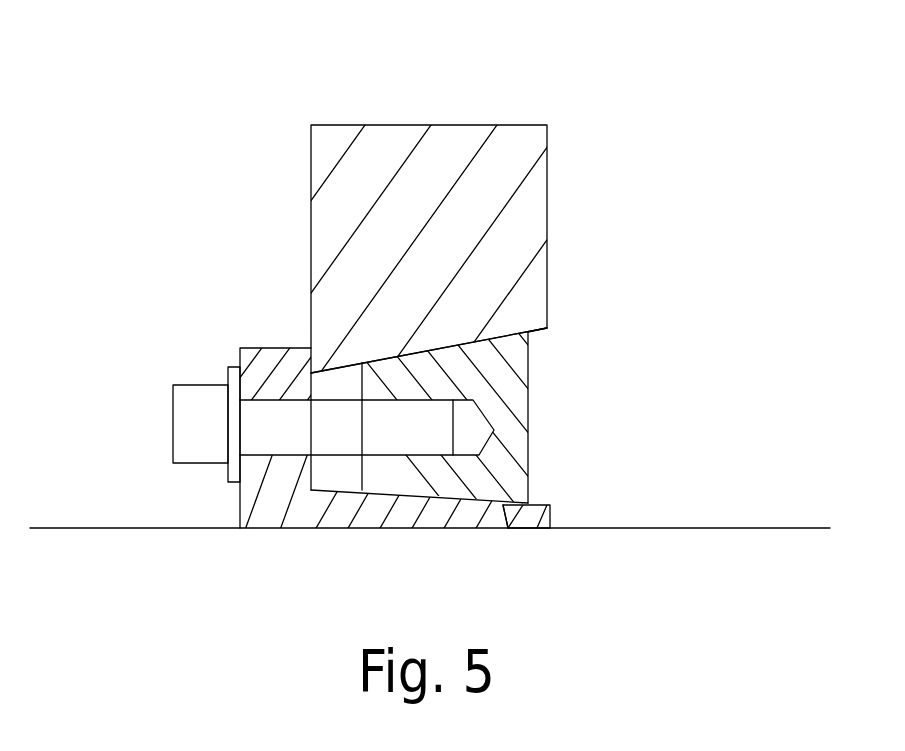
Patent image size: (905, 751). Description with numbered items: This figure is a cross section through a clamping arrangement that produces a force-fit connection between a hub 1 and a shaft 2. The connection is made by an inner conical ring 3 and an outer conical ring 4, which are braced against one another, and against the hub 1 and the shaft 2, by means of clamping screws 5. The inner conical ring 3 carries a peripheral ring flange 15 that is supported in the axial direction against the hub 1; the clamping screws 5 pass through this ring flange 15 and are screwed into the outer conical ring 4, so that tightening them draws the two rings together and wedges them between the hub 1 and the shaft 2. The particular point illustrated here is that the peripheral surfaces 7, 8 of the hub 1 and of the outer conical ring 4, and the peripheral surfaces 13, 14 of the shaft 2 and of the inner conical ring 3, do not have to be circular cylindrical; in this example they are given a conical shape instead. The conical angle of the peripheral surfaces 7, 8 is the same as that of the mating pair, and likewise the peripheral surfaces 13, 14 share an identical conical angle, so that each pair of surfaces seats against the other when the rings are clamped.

The hub 1 is at (505, 153).
The shaft 2 is at (635, 558).
The inner conical ring 3 is at (258, 497).
The outer conical ring 4 is at (512, 395).
The clamping screw 5 is at (245, 423).
The peripheral surface 7 is at (532, 332).
The peripheral surface 8 is at (500, 337).
The peripheral surface 13 is at (540, 505).
The peripheral surface 14 is at (508, 530).
The ring flange 15 is at (267, 366).